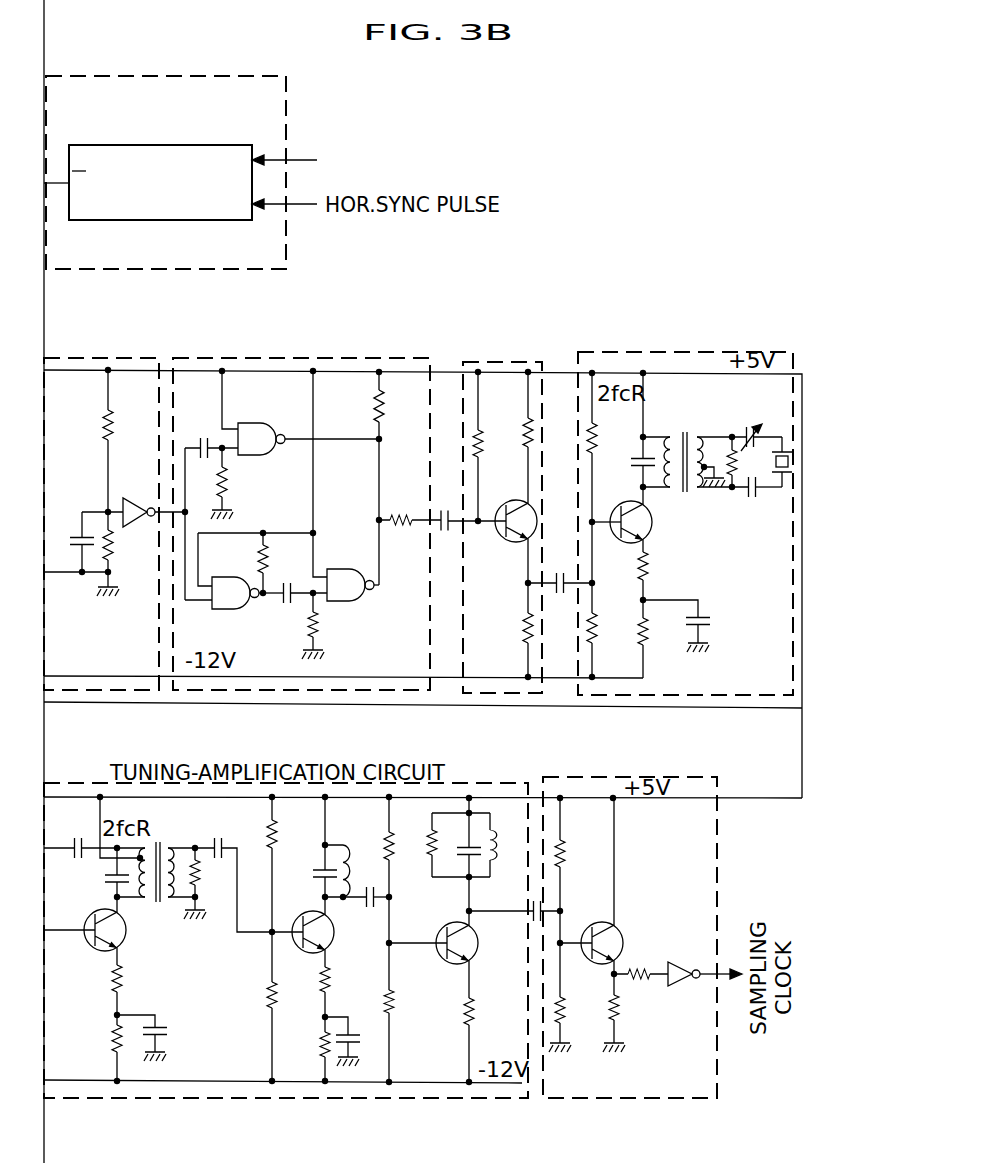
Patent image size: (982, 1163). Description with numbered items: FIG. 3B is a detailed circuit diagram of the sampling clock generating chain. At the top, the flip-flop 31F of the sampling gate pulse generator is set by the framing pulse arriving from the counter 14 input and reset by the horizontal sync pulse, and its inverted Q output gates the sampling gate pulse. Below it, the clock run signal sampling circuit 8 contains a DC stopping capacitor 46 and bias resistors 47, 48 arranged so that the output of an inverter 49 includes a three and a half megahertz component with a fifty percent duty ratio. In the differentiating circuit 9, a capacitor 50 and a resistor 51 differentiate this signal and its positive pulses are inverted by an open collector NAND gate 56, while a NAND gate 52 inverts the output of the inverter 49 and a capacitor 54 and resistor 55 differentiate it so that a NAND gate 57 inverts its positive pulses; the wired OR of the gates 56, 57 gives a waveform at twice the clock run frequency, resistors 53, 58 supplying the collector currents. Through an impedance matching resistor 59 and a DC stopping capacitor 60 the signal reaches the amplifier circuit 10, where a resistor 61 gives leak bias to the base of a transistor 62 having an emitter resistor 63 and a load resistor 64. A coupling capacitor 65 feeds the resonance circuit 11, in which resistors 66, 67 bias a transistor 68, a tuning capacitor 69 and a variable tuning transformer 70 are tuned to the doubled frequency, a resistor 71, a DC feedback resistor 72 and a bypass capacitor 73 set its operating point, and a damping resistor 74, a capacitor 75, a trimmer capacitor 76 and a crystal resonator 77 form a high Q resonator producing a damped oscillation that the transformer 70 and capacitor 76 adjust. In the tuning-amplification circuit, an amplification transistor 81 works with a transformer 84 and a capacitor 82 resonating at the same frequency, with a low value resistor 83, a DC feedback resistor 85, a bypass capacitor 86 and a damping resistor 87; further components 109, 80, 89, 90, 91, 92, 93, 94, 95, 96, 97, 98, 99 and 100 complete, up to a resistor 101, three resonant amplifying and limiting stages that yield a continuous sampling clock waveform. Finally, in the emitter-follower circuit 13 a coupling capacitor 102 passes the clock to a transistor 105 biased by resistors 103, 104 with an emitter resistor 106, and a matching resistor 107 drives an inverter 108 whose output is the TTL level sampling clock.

The flip-flop 31F is at (165, 145).
The counter 14 is at (352, 178).
The clock run signal sampling circuit 8 is at (138, 364).
The differentiating circuit 9 is at (198, 364).
The amplifier circuit 10 is at (468, 366).
The resonance circuit 11 is at (708, 365).
The emitter-follower circuit 13 is at (696, 841).
The DC stopping capacitor 46 is at (74, 535).
The bias resistor 47 is at (100, 431).
The bias resistor 48 is at (116, 546).
The inverter 49 is at (133, 503).
The differentiating capacitor 50 is at (203, 437).
The differentiating resistor 51 is at (227, 481).
The NAND gate 52 is at (248, 593).
The collector current resistor 53 is at (258, 557).
The capacitor 54 is at (285, 608).
The resistor 55 is at (319, 624).
The NAND gate 56 is at (308, 439).
The NAND gate 57 is at (353, 585).
The collector current resistor 58 is at (374, 410).
The impedance matching resistor 59 is at (405, 516).
The DC stopping capacitor 60 is at (447, 534).
The leak bias resistor 61 is at (483, 447).
The transistor 62 is at (507, 545).
The emitter resistor 63 is at (519, 434).
The load resistor 64 is at (520, 625).
The coupling capacitor 65 is at (560, 570).
The base bias resistor 66 is at (598, 444).
The base bias resistor 67 is at (598, 625).
The transistor 68 is at (655, 522).
The tuning capacitor 69 is at (637, 458).
The tuning transformer 70 is at (683, 432).
The resistor 71 is at (653, 567).
The DC feedback resistor 72 is at (656, 633).
The bypass capacitor 73 is at (714, 622).
The damping resistor 74 is at (727, 445).
The capacitor 75 is at (752, 500).
The trimmer capacitor 76 is at (750, 425).
The crystal resonator 77 is at (772, 454).
The capacitor 80 is at (218, 838).
The amplification transistor 81 is at (128, 935).
The capacitor 82 is at (102, 877).
The low value resistor 83 is at (125, 985).
The transformer 84 is at (158, 844).
The DC feedback resistor 85 is at (108, 1041).
The bypass capacitor 86 is at (170, 1031).
The damping resistor 87 is at (199, 881).
The resistor 89 is at (278, 836).
The transistor 90 is at (311, 953).
The capacitor 91 is at (314, 874).
The inductor 92 is at (350, 858).
The resistor 93 is at (332, 975).
The resistor 94 is at (317, 1033).
The capacitor 95 is at (352, 1032).
The resistor 96 is at (397, 996).
The resistor 97 is at (429, 840).
The capacitor 98 is at (459, 853).
The inductor 99 is at (492, 851).
The transistor 100 is at (480, 957).
The resistor 101 is at (462, 1009).
The coupling capacitor 102 is at (537, 924).
The base bias resistor 103 is at (564, 856).
The base bias resistor 104 is at (564, 1013).
The transistor 105 is at (616, 925).
The emitter resistor 106 is at (618, 1011).
The matching resistor 107 is at (642, 968).
The inverter 108 is at (684, 991).
The capacitor 109 is at (76, 838).